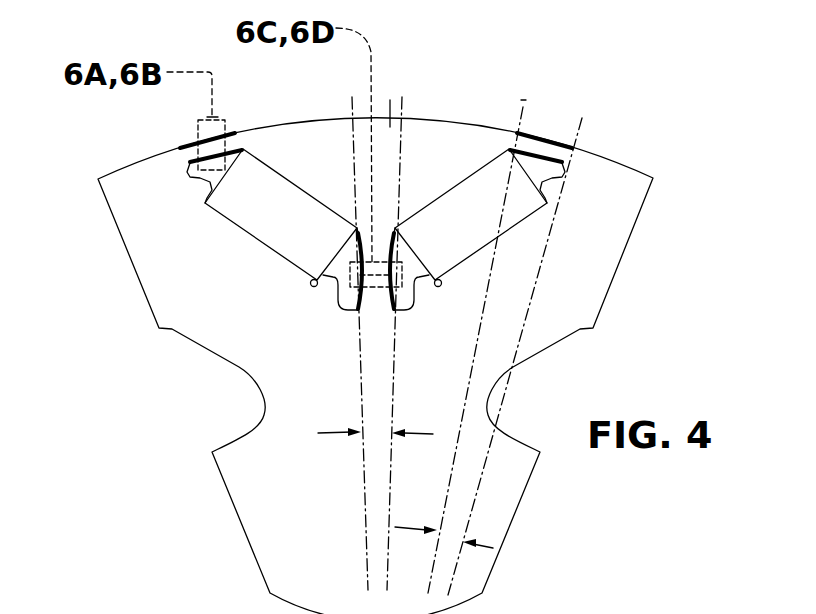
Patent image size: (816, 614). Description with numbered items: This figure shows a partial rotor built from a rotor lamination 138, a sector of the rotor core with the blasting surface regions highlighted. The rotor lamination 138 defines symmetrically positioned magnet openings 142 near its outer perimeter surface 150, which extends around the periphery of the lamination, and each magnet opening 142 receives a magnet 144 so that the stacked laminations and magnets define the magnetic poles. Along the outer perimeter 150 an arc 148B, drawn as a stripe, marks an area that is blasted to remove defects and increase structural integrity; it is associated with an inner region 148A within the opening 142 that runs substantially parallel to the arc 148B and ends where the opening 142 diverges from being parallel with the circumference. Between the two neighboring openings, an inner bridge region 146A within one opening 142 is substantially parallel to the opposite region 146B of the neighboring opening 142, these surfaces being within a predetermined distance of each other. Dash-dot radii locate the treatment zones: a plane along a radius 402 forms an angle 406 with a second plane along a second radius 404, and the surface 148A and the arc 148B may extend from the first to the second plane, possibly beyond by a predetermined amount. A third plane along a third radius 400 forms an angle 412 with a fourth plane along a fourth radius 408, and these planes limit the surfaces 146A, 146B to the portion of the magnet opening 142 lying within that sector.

The rotor lamination 138 is at (287, 440).
The magnet opening 142 is at (263, 247).
The magnet 144 is at (298, 229).
The inner bridge region 146A is at (356, 265).
The opposite region 146B is at (408, 276).
The inner region 148A is at (200, 167).
The arc 148B is at (208, 137).
The outer perimeter surface 150 is at (390, 100).
The third radius 400 is at (402, 108).
The first radius 402 is at (580, 133).
The second radius 404 is at (522, 118).
The angle 406 is at (493, 548).
The fourth radius 408 is at (352, 103).
The angle 412 is at (334, 433).